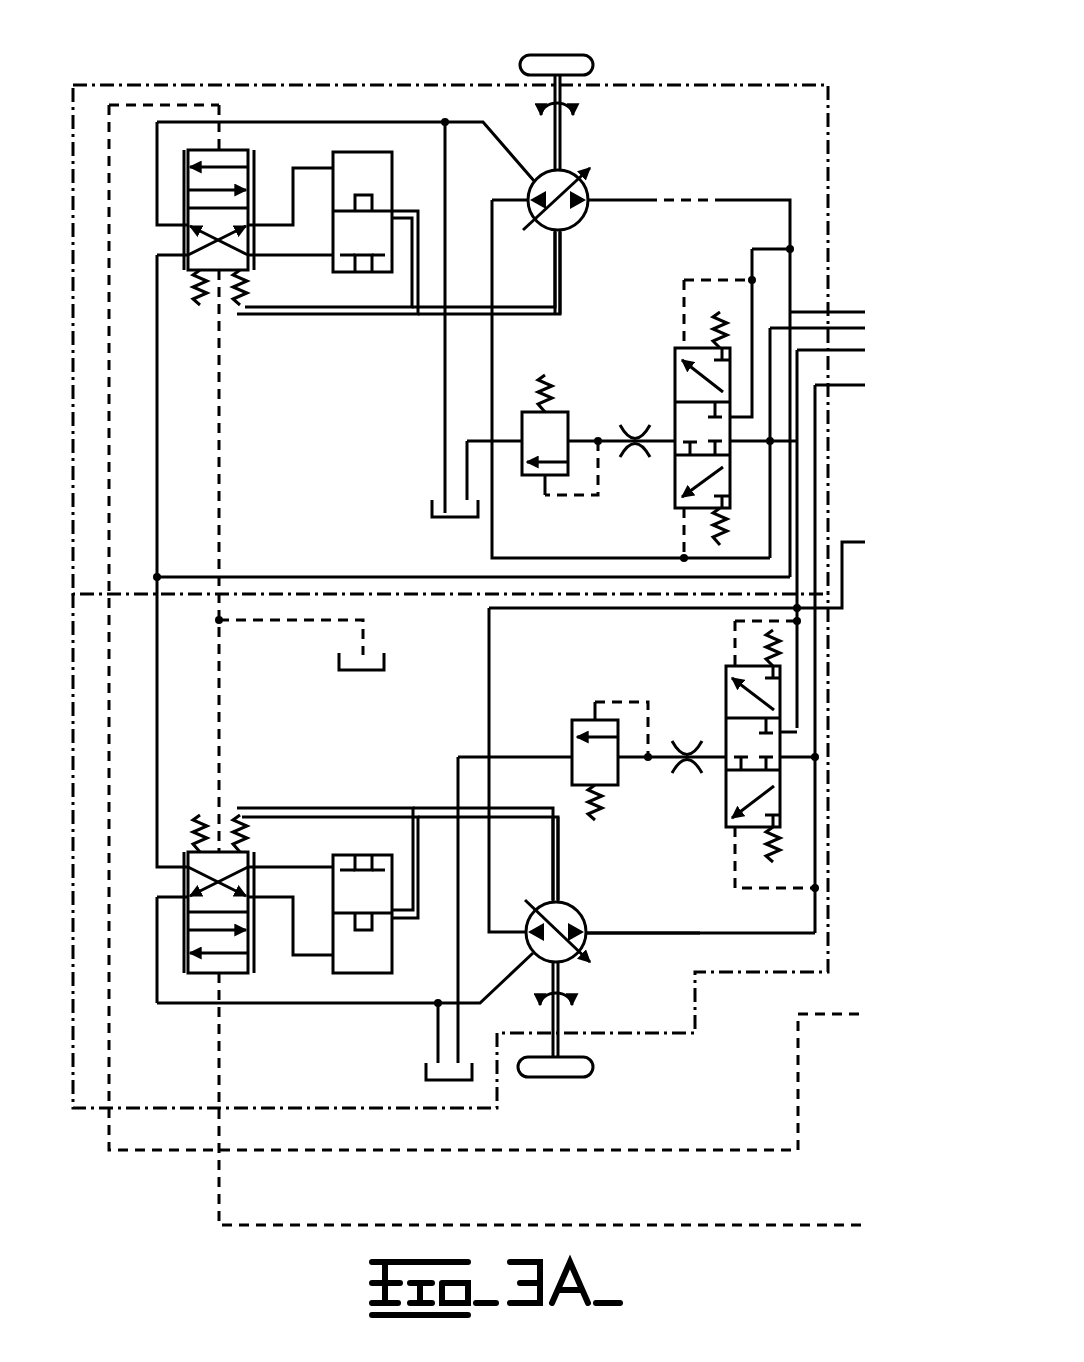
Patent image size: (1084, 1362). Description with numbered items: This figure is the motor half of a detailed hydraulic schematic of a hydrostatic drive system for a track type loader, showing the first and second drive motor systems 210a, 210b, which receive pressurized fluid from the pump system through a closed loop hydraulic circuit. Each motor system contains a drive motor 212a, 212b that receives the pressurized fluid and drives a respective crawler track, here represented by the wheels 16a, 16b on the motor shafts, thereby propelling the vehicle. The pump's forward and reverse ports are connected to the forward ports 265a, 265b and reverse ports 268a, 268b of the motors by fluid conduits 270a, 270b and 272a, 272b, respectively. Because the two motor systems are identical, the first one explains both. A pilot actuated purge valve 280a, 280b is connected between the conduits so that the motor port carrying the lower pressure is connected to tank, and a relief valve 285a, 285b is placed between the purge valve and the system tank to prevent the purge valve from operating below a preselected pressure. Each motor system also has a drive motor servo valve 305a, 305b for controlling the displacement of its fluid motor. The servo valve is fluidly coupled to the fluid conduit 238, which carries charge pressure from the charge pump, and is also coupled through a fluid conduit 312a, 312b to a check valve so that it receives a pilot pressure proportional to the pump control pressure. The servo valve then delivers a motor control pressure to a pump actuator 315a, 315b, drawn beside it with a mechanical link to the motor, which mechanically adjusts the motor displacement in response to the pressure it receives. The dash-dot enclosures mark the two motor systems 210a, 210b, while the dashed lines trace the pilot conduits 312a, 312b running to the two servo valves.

The wheel 16a is at (558, 55).
The wheel 16b is at (553, 1078).
The first drive motor system 210a is at (676, 84).
The second drive motor system 210b is at (640, 1036).
The first drive motor 212a is at (585, 172).
The second drive motor 212b is at (587, 912).
The fluid conduit 238 is at (860, 350).
The forward port 265a is at (590, 200).
The forward port 265b is at (583, 940).
The reverse port 268a is at (523, 198).
The reverse port 268b is at (516, 906).
The fluid conduit 270a is at (848, 312).
The fluid conduit 270b is at (850, 386).
The fluid conduit 272a is at (856, 329).
The fluid conduit 272b is at (856, 542).
The pilot actuated purge valve 280a is at (672, 350).
The pilot actuated purge valve 280b is at (723, 828).
The relief valve 285a is at (527, 478).
The relief valve 285b is at (580, 720).
The drive motor servo valve 305a is at (232, 150).
The drive motor servo valve 305b is at (232, 975).
The fluid conduit 312a is at (835, 1012).
The fluid conduit 312b is at (810, 1232).
The pump actuator 315a is at (370, 152).
The pump actuator 315b is at (368, 855).